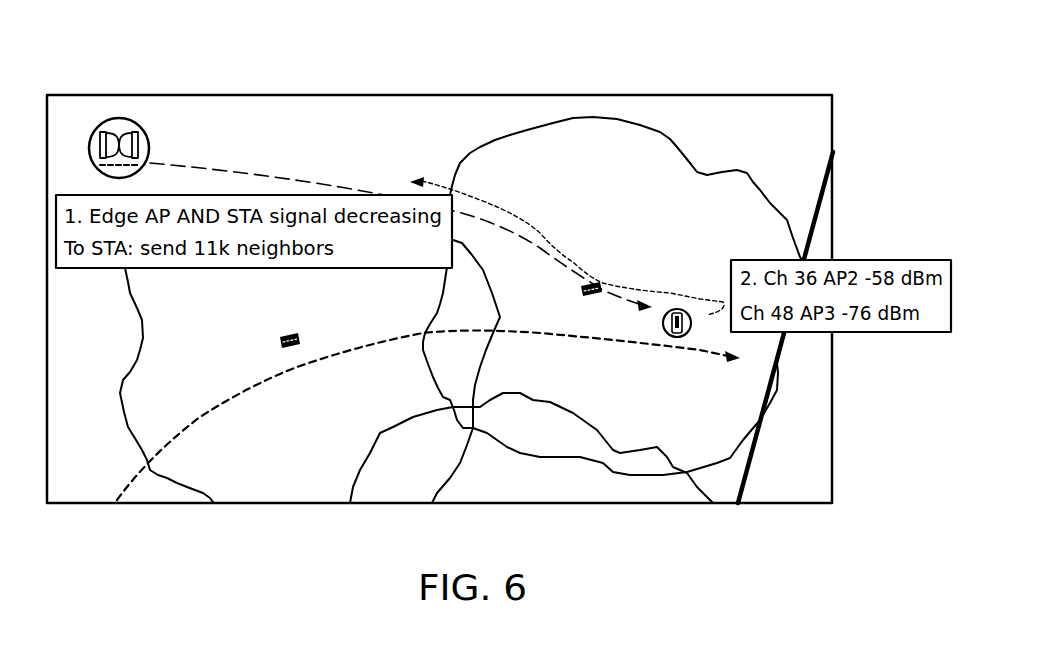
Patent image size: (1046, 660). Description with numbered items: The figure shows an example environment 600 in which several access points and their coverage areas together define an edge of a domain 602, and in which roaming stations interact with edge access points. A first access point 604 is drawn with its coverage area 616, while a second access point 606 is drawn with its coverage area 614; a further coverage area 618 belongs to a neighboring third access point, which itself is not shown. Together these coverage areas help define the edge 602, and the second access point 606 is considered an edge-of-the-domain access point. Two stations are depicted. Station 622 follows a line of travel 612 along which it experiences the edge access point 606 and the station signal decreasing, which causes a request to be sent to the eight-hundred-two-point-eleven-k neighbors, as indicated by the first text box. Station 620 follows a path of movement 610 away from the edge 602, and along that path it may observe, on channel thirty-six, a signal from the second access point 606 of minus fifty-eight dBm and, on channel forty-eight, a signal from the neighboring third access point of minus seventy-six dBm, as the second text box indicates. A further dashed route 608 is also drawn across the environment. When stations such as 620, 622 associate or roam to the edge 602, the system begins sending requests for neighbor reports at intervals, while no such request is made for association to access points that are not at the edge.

The environment 600 is at (676, 56).
The edge of the domain 602 is at (826, 187).
The access point AP1 604 is at (278, 340).
The access point AP2 606 is at (597, 282).
The station travel path 608 is at (603, 343).
The path of movement 610 is at (658, 290).
The line of travel 612 is at (543, 250).
The coverage area of AP2 614 is at (745, 173).
The coverage area of AP1 616 is at (122, 397).
The coverage area of neighboring access point 618 is at (368, 463).
The station 620 is at (680, 339).
The station 622 is at (150, 149).